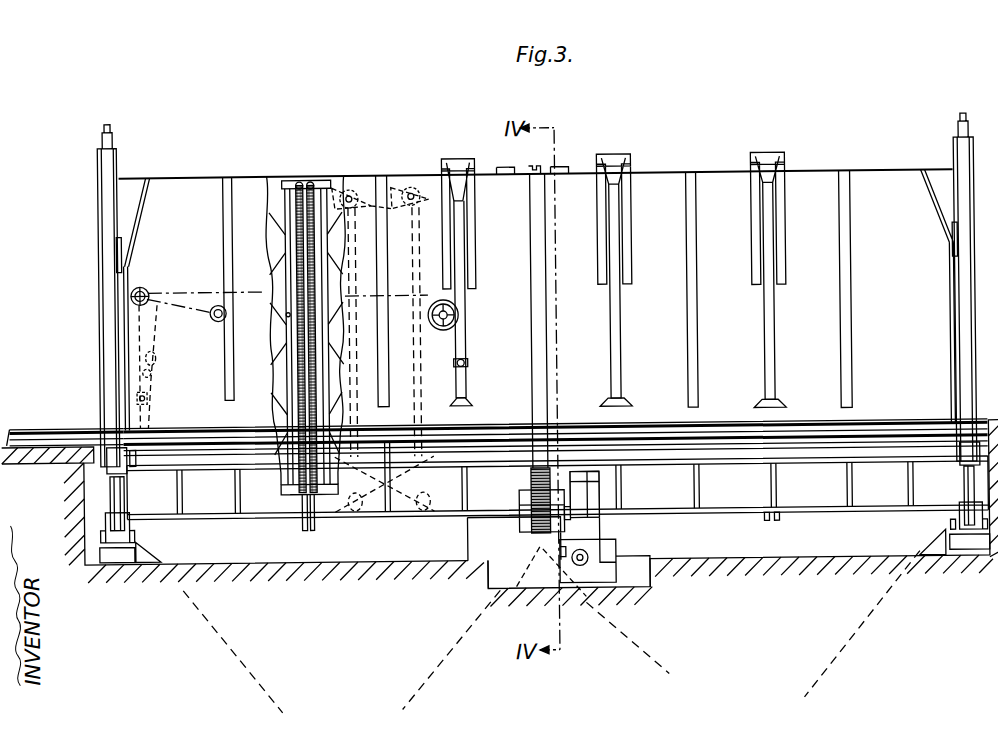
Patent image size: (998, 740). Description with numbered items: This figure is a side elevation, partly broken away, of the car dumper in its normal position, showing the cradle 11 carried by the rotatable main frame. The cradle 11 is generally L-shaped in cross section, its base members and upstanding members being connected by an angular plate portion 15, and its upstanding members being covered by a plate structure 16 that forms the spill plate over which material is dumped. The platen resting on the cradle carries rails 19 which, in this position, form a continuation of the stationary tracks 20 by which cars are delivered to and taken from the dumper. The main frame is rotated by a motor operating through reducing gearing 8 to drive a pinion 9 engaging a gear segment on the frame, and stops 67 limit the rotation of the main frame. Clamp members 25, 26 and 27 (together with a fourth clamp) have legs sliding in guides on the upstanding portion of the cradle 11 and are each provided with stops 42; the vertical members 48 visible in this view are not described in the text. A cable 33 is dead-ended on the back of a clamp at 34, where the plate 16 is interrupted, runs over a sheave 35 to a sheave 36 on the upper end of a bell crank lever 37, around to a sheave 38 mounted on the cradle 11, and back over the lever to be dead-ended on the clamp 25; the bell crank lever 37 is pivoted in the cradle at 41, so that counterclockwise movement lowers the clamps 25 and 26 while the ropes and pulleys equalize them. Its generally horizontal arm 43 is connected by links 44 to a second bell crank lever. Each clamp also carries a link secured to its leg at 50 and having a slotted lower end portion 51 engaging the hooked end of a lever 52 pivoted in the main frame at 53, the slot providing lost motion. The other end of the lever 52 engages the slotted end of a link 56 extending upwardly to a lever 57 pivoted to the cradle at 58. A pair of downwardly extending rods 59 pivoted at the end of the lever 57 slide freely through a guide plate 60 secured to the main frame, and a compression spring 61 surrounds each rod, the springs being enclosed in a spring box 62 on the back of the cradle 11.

The reducing gearing 8 is at (580, 478).
The pinion 9 is at (528, 512).
The cradle 11 is at (719, 178).
The angular plate portion 15 is at (531, 454).
The plate structure 16 is at (564, 320).
The rails 19 is at (734, 424).
The stationary tracks 20 is at (45, 432).
The clamp member 25 is at (766, 188).
The clamp member 26 is at (614, 192).
The clamp member 27 is at (473, 194).
The cable 33 is at (197, 294).
The dead end 34 is at (466, 347).
The sheave 35 is at (446, 329).
The sheave 36 is at (146, 289).
The bell crank lever 37 is at (158, 332).
The sheave 38 is at (217, 319).
The pivot 41 is at (156, 354).
The stops 42 is at (470, 404).
The horizontal arm 43 is at (150, 370).
The links 44 is at (147, 396).
The plate 48 is at (224, 237).
The securing point 50 is at (468, 366).
The slotted lower end portion 51 is at (415, 422).
The lever 52 is at (417, 510).
The pivot 53 is at (358, 510).
The link 56 is at (357, 368).
The lever 57 is at (331, 185).
The pivot 58 is at (390, 206).
The rods 59 is at (302, 528).
The guide plate 60 is at (284, 492).
The compression spring 61 is at (296, 355).
The spring box 62 is at (292, 212).
The stops 67 is at (109, 126).